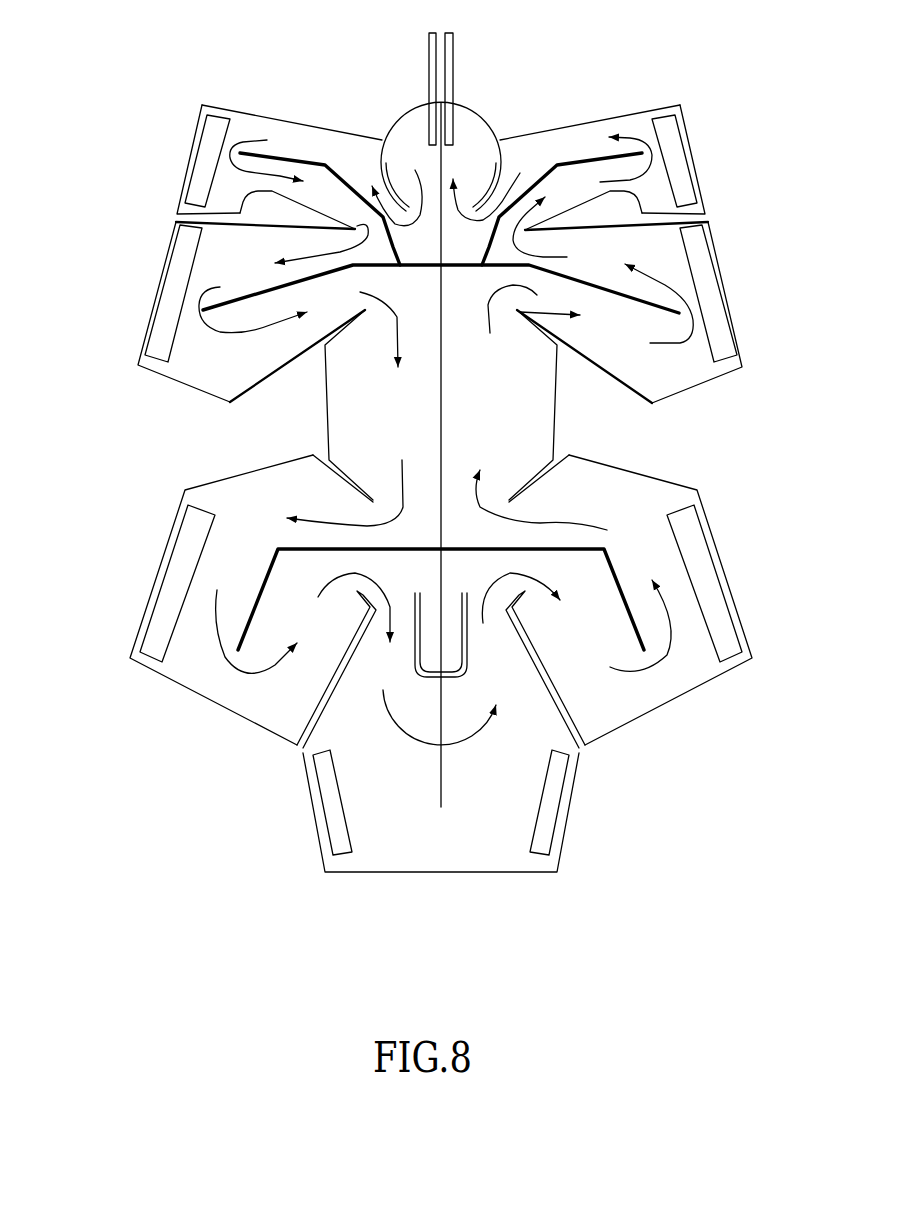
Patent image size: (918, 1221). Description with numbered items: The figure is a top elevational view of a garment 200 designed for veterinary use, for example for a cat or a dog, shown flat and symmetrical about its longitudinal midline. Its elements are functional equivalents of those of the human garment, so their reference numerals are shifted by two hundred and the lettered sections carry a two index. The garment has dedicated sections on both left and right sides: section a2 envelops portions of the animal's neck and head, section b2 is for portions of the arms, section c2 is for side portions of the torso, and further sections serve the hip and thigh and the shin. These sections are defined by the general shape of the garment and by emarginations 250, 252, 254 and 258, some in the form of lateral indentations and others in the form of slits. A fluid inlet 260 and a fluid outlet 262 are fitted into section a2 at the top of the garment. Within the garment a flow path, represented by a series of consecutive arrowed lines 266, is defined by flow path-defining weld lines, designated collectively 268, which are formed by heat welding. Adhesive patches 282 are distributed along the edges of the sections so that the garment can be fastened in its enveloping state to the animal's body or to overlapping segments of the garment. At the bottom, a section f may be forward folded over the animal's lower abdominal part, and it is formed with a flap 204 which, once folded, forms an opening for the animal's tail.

The garment 200 is at (700, 436).
The flap 204 is at (450, 667).
The emargination 250 is at (597, 213).
The emargination 252 is at (537, 333).
The emargination 254 is at (540, 482).
The emargination 258 is at (540, 672).
The fluid inlet 260 is at (431, 72).
The fluid outlet 262 is at (456, 77).
The arrowed lines 266 is at (663, 138).
The flow path-defining weld lines 268 is at (610, 667).
The adhesive patches 282 is at (207, 163).
The section a2 is at (273, 133).
The section b2 is at (207, 367).
The section c2 is at (360, 417).
The section f is at (373, 717).